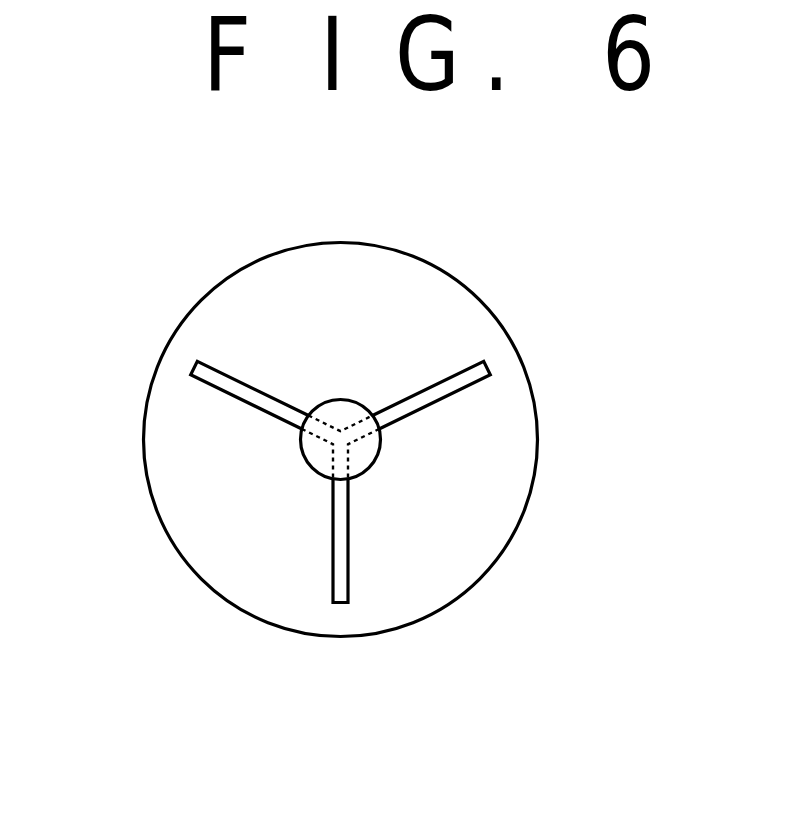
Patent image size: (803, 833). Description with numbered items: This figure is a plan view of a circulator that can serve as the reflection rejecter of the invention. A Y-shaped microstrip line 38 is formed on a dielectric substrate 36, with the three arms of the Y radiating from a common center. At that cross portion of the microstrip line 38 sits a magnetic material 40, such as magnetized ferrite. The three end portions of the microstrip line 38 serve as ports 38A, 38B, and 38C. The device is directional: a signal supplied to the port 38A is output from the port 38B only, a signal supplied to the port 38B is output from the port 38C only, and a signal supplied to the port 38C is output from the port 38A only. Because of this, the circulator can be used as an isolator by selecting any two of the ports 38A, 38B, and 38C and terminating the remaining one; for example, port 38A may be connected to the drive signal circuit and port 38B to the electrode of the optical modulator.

The dielectric substrate 36 is at (519, 503).
The Y-shaped microstrip line 38 is at (350, 510).
The port 38A is at (190, 363).
The port 38B is at (484, 364).
The port 38C is at (343, 606).
The magnetic material 40 is at (369, 468).